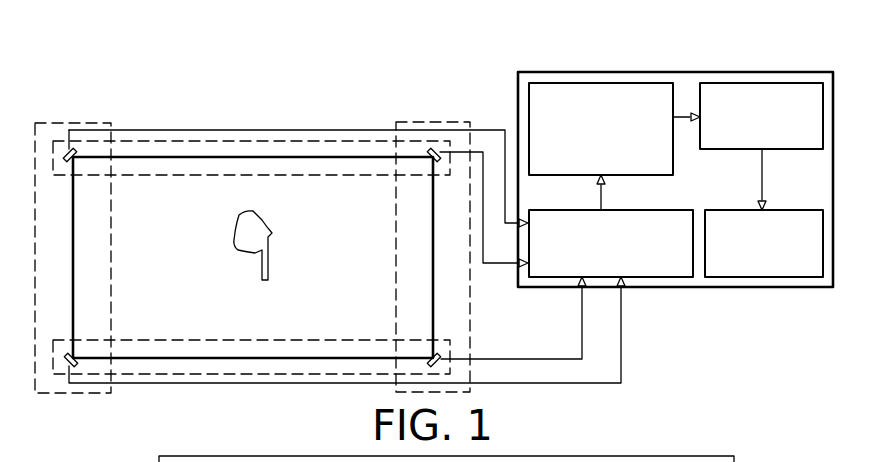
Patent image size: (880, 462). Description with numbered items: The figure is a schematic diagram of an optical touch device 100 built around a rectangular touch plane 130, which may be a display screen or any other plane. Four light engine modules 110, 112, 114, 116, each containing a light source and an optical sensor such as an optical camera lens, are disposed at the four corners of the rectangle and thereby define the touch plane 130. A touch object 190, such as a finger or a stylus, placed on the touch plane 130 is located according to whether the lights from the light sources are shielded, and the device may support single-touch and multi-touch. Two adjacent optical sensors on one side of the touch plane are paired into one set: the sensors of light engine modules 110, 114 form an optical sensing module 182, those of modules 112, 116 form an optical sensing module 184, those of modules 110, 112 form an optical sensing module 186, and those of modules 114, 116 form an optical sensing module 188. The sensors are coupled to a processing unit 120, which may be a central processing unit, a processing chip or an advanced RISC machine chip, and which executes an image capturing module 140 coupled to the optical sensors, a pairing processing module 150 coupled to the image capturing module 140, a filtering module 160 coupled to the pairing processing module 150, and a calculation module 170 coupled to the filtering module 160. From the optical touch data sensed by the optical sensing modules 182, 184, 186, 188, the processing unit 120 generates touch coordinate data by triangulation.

The optical touch device 100 is at (741, 407).
The light engine module 110 is at (74, 150).
The light engine module 112 is at (76, 367).
The light engine module 114 is at (430, 148).
The light engine module 116 is at (438, 352).
The processing unit 120 is at (672, 172).
The touch plane 130 is at (73, 258).
The image capturing module 140 is at (652, 277).
The pairing processing module 150 is at (648, 83).
The filtering module 160 is at (798, 83).
The calculation module 170 is at (800, 277).
The optical sensing module 182 is at (251, 140).
The optical sensing module 184 is at (254, 375).
The optical sensing module 186 is at (111, 307).
The optical sensing module 188 is at (470, 305).
The touch object 190 is at (272, 236).